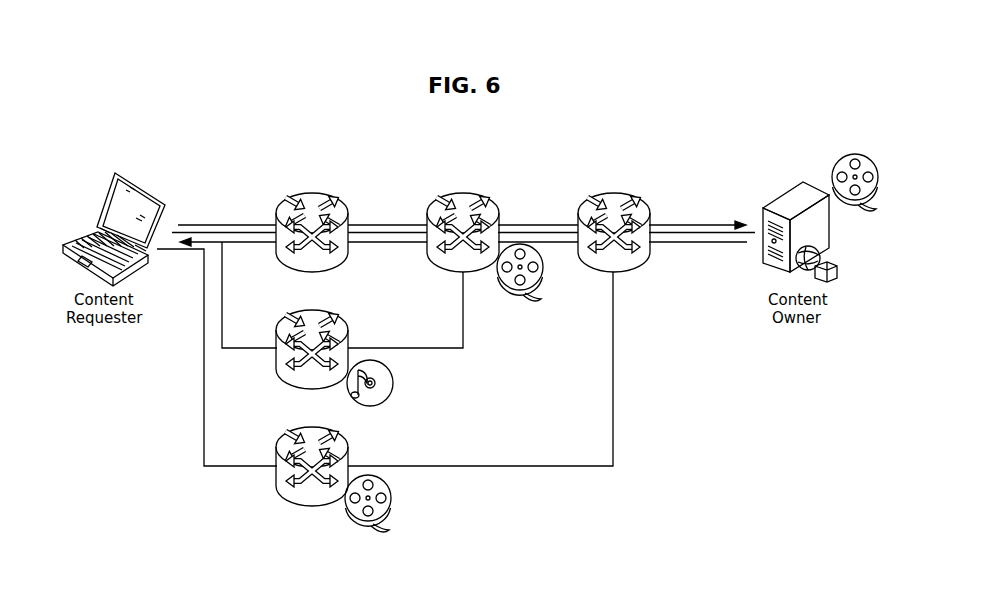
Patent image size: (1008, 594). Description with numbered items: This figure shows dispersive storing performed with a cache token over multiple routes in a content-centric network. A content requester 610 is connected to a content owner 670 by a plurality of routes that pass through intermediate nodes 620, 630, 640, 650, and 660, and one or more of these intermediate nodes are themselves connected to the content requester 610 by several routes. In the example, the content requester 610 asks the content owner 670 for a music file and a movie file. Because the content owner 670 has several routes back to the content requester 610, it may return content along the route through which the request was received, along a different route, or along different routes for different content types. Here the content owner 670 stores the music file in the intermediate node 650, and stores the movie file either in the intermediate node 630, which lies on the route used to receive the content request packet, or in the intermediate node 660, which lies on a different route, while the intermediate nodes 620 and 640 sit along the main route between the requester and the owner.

The content requester 610 is at (103, 198).
The intermediate node 620 is at (315, 193).
The intermediate node 630 is at (466, 193).
The intermediate node 640 is at (614, 193).
The intermediate node 650 is at (310, 311).
The intermediate node 660 is at (311, 428).
The content owner 670 is at (780, 196).